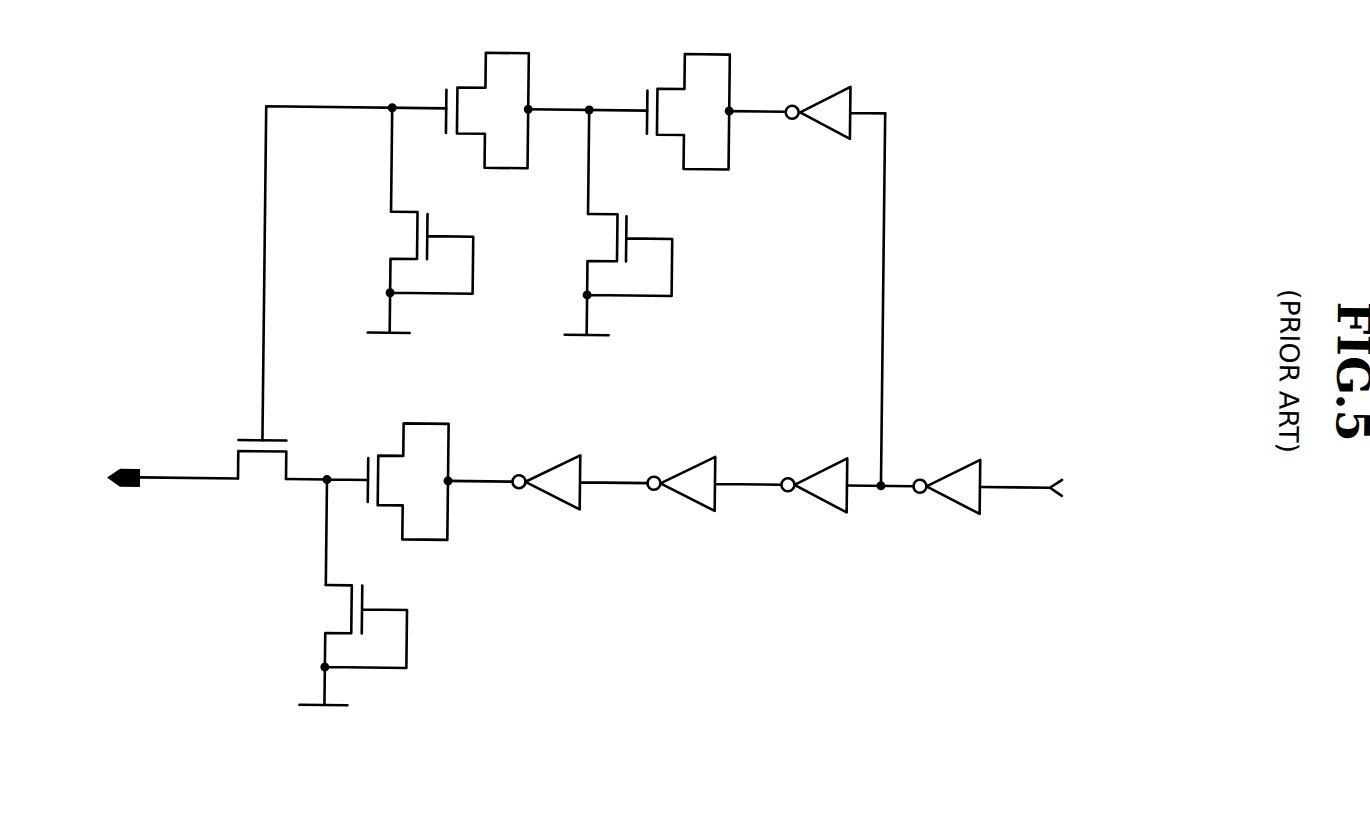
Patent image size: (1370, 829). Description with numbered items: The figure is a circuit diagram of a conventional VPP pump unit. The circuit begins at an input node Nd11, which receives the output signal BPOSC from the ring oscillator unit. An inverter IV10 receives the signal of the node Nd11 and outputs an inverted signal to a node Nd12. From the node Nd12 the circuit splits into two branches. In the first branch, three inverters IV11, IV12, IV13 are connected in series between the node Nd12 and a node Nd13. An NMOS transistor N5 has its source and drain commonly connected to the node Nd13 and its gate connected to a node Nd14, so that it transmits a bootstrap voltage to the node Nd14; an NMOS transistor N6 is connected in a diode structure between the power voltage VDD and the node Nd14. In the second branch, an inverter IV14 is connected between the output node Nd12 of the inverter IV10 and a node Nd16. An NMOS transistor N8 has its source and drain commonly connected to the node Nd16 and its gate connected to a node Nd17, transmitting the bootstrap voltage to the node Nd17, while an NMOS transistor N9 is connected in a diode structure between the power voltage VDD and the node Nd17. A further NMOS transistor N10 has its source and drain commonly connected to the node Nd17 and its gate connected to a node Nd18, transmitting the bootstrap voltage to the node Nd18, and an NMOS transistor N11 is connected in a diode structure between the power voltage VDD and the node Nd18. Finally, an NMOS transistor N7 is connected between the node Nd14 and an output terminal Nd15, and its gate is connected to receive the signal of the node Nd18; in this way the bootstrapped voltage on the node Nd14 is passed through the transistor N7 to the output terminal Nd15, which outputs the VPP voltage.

The NMOS transistor N5 is at (410, 481).
The NMOS transistor N6 is at (344, 645).
The NMOS transistor N7 is at (262, 474).
The NMOS transistor N8 is at (690, 109).
The NMOS transistor N9 is at (612, 275).
The NMOS transistor N10 is at (481, 106).
The NMOS transistor N11 is at (408, 272).
The inverter IV10 is at (945, 474).
The inverter IV11 is at (812, 473).
The inverter IV12 is at (711, 473).
The inverter IV13 is at (576, 472).
The inverter IV14 is at (834, 100).
The input node Nd11 is at (1013, 485).
The node Nd12 is at (885, 486).
The node Nd13 is at (483, 483).
The node Nd14 is at (327, 481).
The output terminal Nd15 is at (182, 484).
The node Nd16 is at (756, 110).
The node Nd17 is at (585, 108).
The node Nd18 is at (261, 278).
The power voltage VDD is at (454, 537).
The VPP voltage VPP is at (100, 478).
The output signal BPOSC is at (1107, 492).